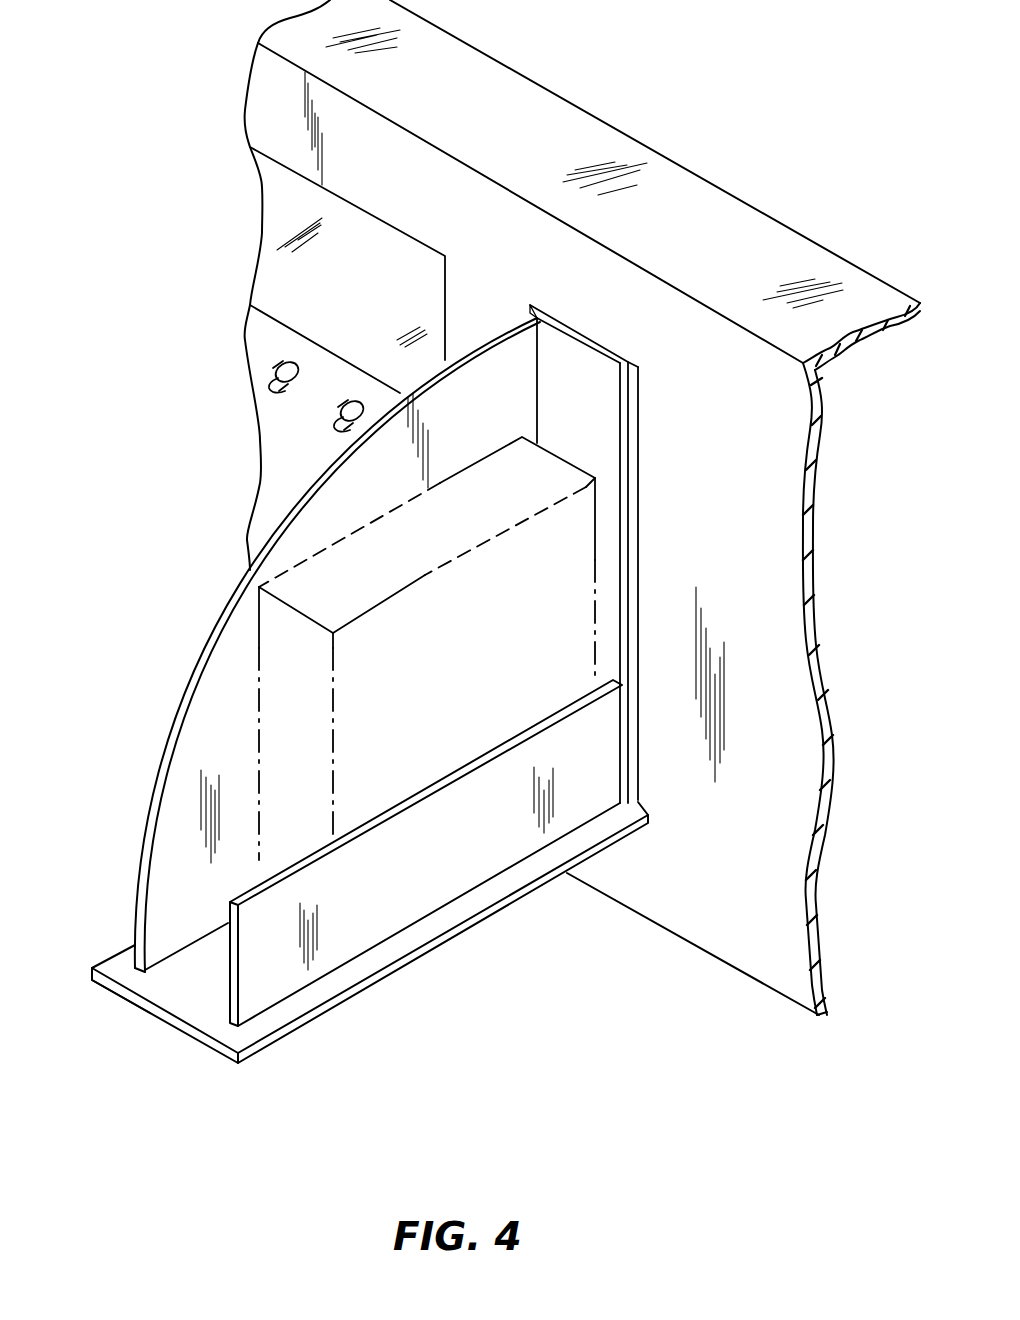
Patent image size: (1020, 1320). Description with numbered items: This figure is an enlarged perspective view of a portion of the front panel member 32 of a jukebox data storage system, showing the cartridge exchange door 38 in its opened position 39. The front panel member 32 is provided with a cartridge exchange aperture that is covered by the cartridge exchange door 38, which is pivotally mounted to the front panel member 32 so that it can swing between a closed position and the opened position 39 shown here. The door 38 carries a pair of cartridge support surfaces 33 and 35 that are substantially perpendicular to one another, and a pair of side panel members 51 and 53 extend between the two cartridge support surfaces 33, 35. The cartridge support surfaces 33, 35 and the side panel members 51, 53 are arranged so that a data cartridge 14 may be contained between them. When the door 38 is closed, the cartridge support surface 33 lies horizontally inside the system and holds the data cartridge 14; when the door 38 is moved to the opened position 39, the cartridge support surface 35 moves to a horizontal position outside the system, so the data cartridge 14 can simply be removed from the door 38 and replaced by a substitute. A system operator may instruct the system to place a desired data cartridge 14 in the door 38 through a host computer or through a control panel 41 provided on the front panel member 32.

The data cartridge 14 is at (342, 538).
The front panel member 32 is at (782, 218).
The cartridge support surface 33 is at (592, 393).
The cartridge support surface 35 is at (183, 997).
The cartridge exchange door 38 is at (346, 722).
The opened position 39 is at (98, 987).
The control panel 41 is at (267, 375).
The side panel member 51 is at (158, 769).
The side panel member 53 is at (435, 862).